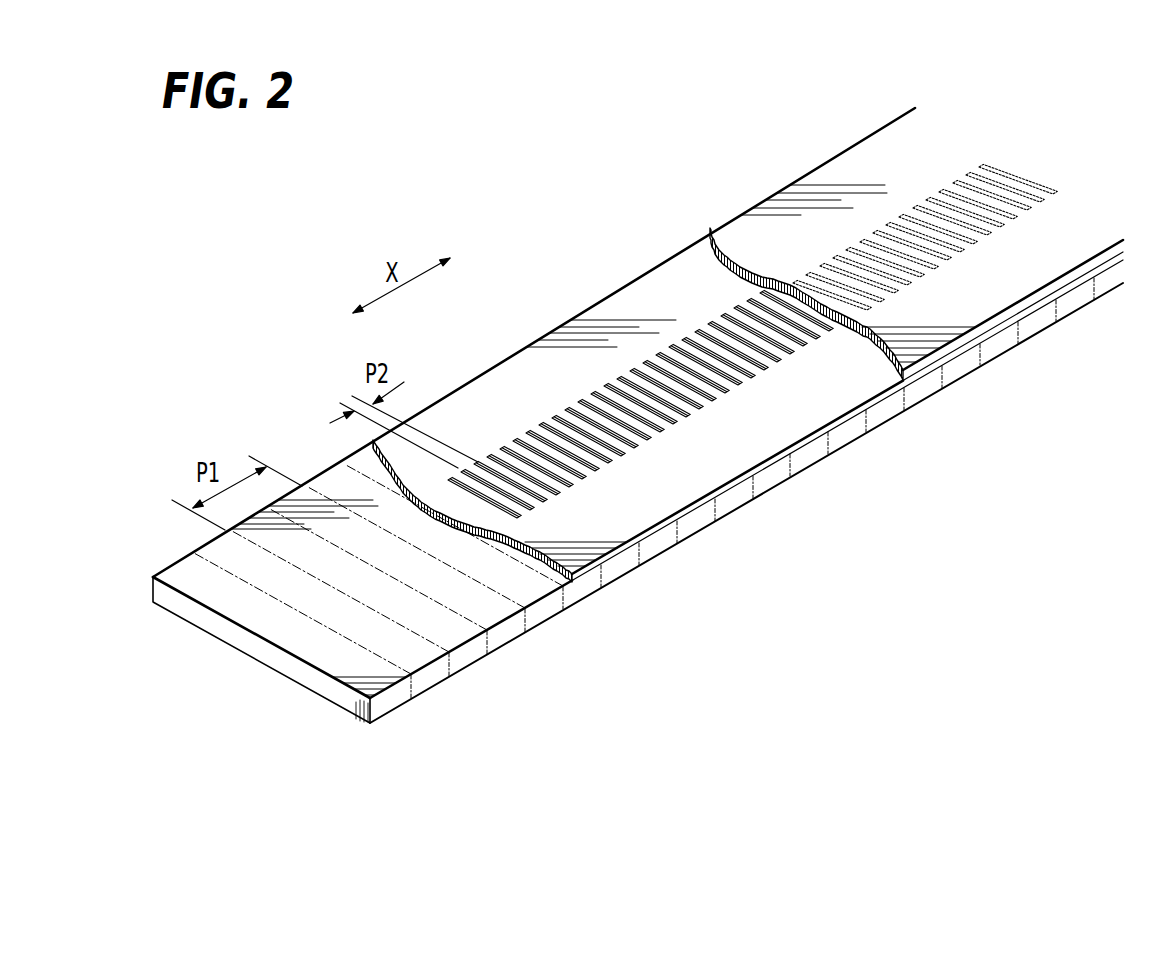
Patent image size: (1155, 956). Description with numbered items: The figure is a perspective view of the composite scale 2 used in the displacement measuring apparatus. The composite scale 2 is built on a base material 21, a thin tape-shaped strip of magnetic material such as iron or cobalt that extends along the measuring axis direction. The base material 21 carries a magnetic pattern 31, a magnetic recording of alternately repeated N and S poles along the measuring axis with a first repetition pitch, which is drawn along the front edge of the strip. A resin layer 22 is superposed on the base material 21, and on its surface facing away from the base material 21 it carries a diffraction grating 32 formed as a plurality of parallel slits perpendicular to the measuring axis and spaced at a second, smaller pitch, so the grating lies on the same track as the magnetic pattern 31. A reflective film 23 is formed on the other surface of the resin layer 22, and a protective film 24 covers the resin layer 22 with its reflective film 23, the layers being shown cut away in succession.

The composite scale 2 is at (823, 135).
The base material 21 is at (255, 647).
The resin layer 22 is at (593, 568).
The reflective film 23 is at (800, 413).
The protective film 24 is at (982, 298).
The magnetic pattern 31 is at (462, 683).
The diffraction grating 32 is at (678, 432).